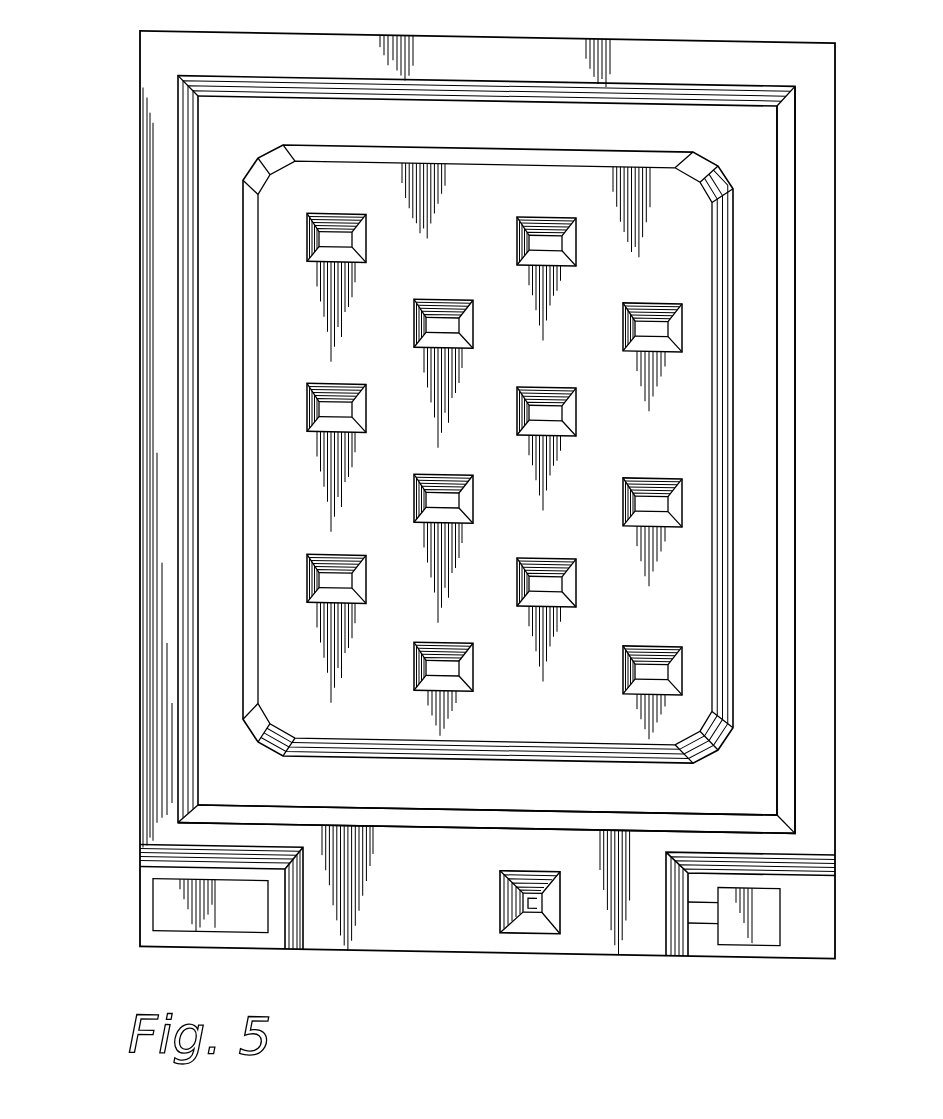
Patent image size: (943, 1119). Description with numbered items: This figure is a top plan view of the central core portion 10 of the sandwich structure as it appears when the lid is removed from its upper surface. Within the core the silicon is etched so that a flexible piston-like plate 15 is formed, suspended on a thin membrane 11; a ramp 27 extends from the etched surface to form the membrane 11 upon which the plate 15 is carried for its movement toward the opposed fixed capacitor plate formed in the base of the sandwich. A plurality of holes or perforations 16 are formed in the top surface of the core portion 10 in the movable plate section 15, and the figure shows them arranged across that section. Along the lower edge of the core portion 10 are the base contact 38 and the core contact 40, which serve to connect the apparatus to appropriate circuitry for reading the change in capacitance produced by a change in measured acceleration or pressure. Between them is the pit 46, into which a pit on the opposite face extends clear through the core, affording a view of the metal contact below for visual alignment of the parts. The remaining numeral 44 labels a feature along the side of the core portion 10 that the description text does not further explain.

The central core portion 10 is at (612, 20).
The membrane 11 is at (765, 611).
The flexible piston-like plate 15 is at (497, 169).
The holes or perforations 16 is at (648, 479).
The ramp 27 is at (787, 754).
The base contact 38 is at (228, 909).
The core contact 40 is at (755, 917).
The side wall 44 is at (165, 634).
The pit 46 is at (534, 911).